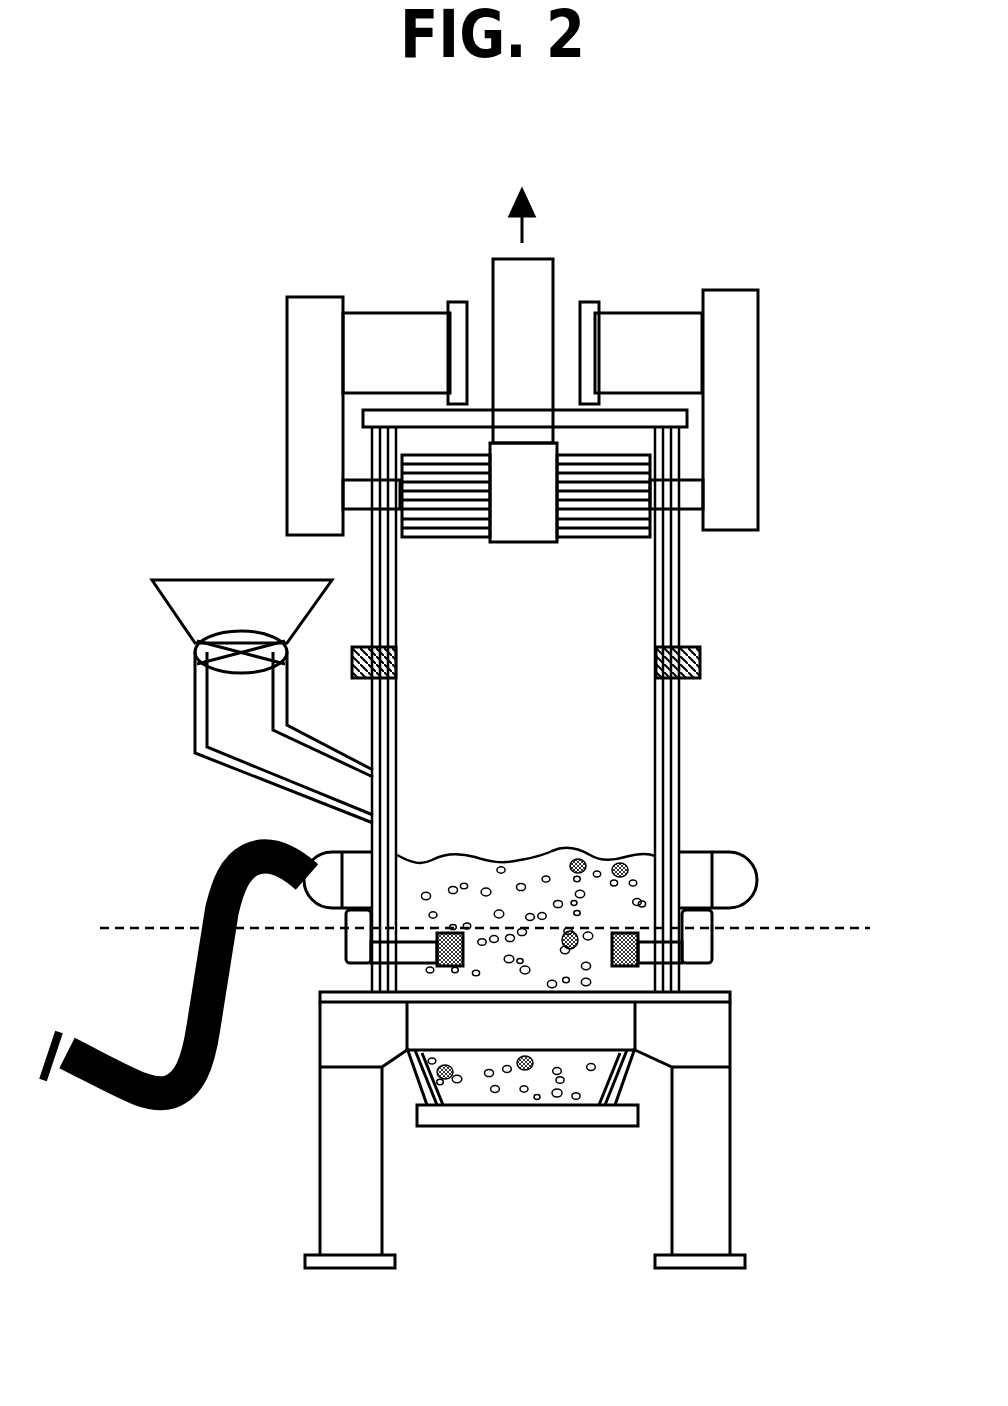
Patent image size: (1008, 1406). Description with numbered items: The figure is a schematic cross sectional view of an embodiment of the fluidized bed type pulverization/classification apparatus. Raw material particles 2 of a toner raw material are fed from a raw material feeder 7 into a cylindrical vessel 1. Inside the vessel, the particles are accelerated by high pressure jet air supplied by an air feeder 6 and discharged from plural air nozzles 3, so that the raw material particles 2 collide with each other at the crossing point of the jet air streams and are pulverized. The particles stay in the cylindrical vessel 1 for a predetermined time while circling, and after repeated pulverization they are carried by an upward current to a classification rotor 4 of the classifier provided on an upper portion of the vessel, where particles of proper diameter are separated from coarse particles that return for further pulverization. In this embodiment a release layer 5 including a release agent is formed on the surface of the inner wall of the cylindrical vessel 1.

The cylindrical vessel 1 is at (640, 602).
The raw material particles 2 is at (578, 868).
The air nozzles 3 is at (453, 966).
The classification rotor 4 is at (348, 496).
The release layer 5 is at (376, 562).
The air feeder 6 is at (120, 1100).
The raw material feeder 7 is at (210, 580).